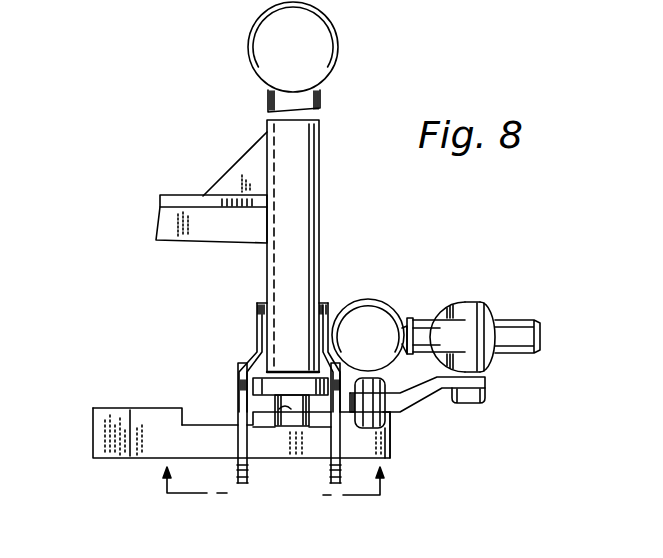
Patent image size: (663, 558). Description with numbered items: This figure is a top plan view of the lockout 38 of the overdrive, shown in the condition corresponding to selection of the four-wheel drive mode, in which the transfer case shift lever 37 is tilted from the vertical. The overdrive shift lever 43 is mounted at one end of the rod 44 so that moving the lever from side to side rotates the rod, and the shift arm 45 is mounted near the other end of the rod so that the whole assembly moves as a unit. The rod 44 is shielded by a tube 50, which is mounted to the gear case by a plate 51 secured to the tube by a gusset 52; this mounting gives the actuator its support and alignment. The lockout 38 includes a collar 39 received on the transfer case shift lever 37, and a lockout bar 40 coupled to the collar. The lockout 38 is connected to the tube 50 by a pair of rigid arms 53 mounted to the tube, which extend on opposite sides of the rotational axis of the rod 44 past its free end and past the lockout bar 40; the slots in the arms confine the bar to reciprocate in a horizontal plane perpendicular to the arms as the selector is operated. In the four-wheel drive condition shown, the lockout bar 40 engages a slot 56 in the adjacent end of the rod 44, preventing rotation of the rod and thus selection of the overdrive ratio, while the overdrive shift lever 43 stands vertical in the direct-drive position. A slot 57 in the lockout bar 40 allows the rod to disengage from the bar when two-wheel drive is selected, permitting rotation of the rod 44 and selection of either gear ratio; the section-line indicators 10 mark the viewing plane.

The section line 10 is at (279, 491).
The transfer case shift lever 37 is at (427, 317).
The lockout 38 is at (392, 462).
The collar 39 is at (495, 308).
The lockout bar 40 is at (95, 458).
The overdrive shift lever 43 is at (328, 46).
The rod 44 is at (307, 202).
The shift arm 45 is at (255, 385).
The tube 50 is at (322, 160).
The plate 51 is at (193, 232).
The gusset 52 is at (233, 167).
The rigid arms 53 is at (243, 485).
The slot 56 is at (280, 408).
The slot 57 is at (192, 405).